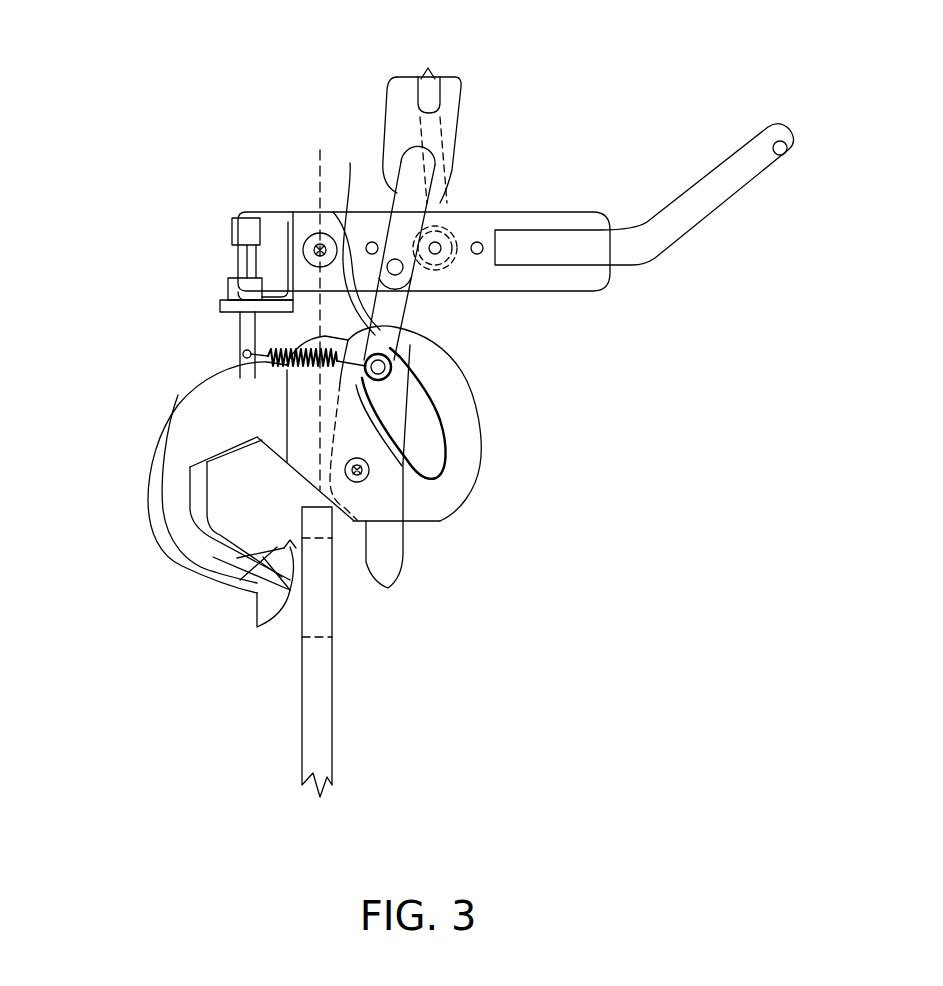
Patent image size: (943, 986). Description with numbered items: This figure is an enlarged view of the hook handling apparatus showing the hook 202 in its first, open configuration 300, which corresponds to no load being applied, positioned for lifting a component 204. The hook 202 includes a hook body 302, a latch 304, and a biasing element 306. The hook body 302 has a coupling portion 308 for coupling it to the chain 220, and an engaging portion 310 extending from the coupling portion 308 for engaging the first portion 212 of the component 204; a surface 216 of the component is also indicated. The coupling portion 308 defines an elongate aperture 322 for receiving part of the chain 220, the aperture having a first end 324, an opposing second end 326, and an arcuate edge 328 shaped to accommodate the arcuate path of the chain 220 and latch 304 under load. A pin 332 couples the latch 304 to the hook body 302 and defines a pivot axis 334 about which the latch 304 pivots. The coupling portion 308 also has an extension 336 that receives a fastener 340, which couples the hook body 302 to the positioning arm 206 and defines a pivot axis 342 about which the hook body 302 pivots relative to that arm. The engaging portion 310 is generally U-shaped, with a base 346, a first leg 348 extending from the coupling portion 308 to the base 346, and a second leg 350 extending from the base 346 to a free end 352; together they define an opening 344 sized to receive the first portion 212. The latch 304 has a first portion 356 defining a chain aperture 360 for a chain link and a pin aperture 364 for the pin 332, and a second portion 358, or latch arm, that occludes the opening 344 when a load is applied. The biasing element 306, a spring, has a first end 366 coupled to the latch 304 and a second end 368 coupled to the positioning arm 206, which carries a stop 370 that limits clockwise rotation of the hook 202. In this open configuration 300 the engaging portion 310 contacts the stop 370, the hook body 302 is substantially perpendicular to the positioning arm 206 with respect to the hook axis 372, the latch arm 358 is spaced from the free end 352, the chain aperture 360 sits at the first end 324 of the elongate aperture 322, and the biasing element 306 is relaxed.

The hook 202 is at (135, 461).
The component 204 is at (349, 713).
The positioning arm 206 is at (735, 203).
The first portion 212 is at (323, 773).
The plate face 216 is at (319, 594).
The chain 220 is at (396, 100).
The first, open configuration 300 is at (600, 112).
The hook body 302 is at (477, 453).
The latch 304 is at (387, 560).
The biasing element 306 is at (300, 347).
The coupling portion 308 is at (425, 355).
The engaging portion 310 is at (157, 503).
The elongate aperture 322 is at (423, 397).
The first end 324 is at (355, 236).
The second end 326 is at (483, 477).
The arcuate edge 328 is at (425, 373).
The pin 332 is at (352, 485).
The pivot axis 334 is at (367, 479).
The extension 336 is at (303, 232).
The fastener 340 is at (293, 263).
The pivot axis 342 is at (313, 236).
The opening 344 is at (245, 562).
The base 346 is at (155, 545).
The first leg 348 is at (173, 422).
The second leg 350 is at (198, 570).
The free end 352 is at (259, 638).
The first portion 356 is at (400, 430).
The second portion 358 is at (385, 592).
The chain aperture 360 is at (430, 333).
The pin aperture 364 is at (373, 463).
The first end 366 is at (368, 358).
The second end 368 is at (238, 356).
The stop 370 is at (235, 333).
The hook axis 372 is at (317, 148).